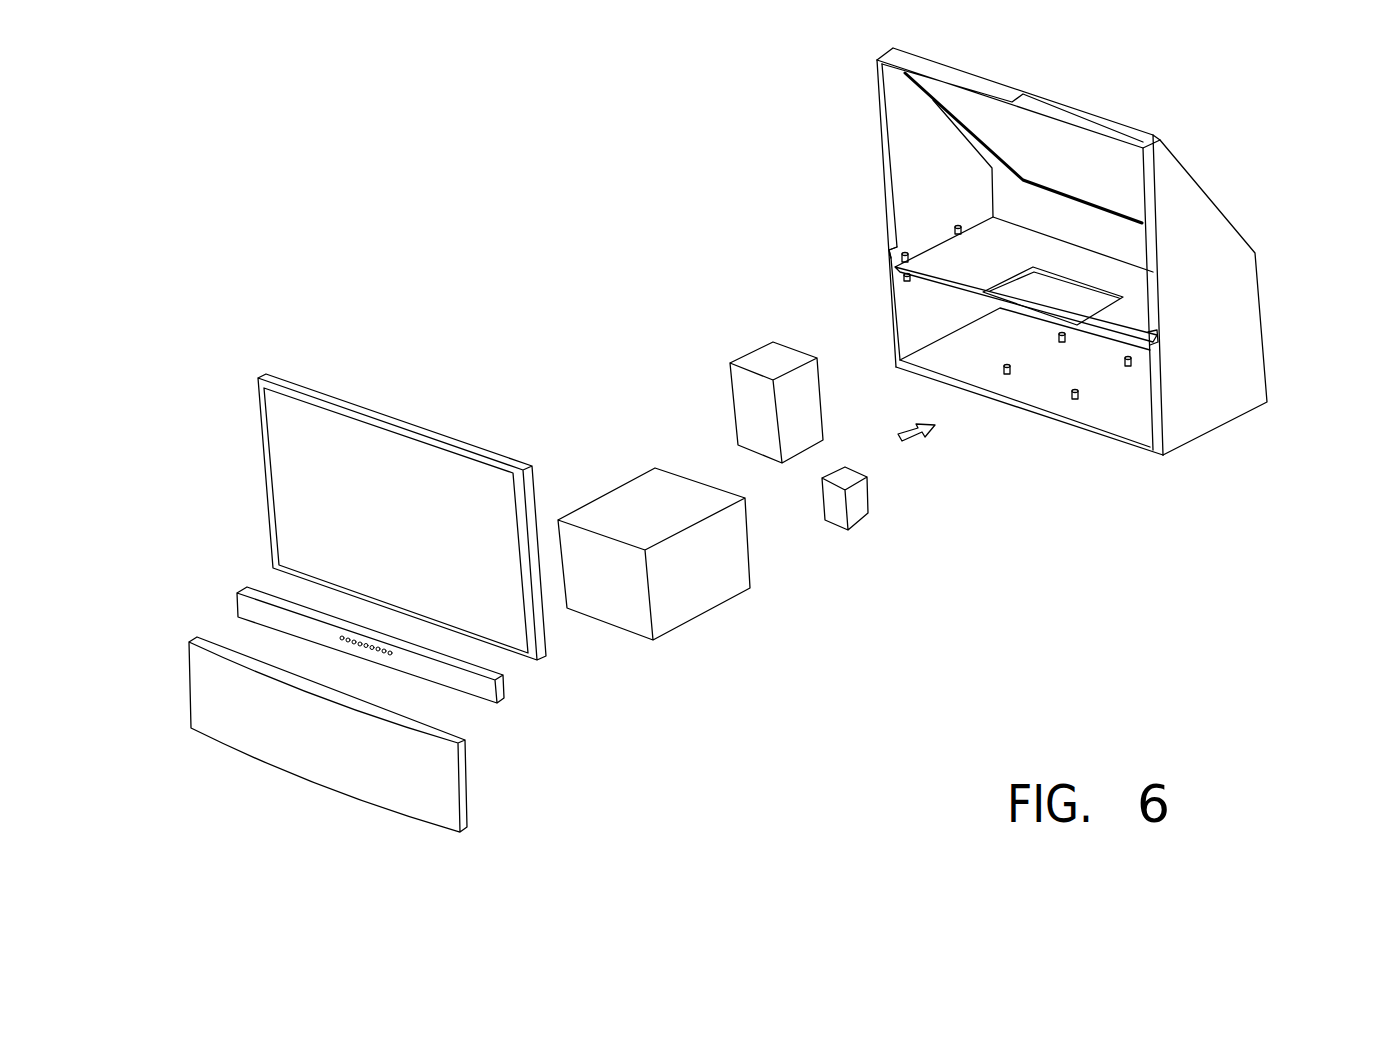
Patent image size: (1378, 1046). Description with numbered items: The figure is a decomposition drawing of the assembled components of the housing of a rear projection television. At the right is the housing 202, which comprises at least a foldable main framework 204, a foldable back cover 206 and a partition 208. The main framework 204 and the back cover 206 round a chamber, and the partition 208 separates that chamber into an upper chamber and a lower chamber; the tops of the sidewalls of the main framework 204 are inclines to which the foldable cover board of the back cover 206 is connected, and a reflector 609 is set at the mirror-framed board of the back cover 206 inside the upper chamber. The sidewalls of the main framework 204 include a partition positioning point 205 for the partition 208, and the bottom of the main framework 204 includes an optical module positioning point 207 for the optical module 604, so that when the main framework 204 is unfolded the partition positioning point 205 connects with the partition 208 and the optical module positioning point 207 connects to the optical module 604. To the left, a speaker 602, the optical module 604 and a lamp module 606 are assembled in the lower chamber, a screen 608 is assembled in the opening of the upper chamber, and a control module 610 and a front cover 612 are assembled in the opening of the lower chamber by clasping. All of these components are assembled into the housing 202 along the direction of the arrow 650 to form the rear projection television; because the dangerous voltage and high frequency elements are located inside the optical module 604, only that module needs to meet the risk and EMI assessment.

The housing 202 is at (1193, 153).
The foldable main framework 204 is at (1218, 377).
The partition positioning point 205 is at (887, 253).
The foldable back cover 206 is at (1007, 193).
The optical module positioning point 207 is at (1007, 376).
The partition 208 is at (1118, 325).
The reflector 609 is at (1063, 150).
The arrow 650 is at (920, 433).
The speaker 602 is at (770, 355).
The optical module 604 is at (633, 500).
The lamp module 606 is at (853, 503).
The screen 608 is at (345, 437).
The control module 610 is at (255, 610).
The front cover 612 is at (220, 697).